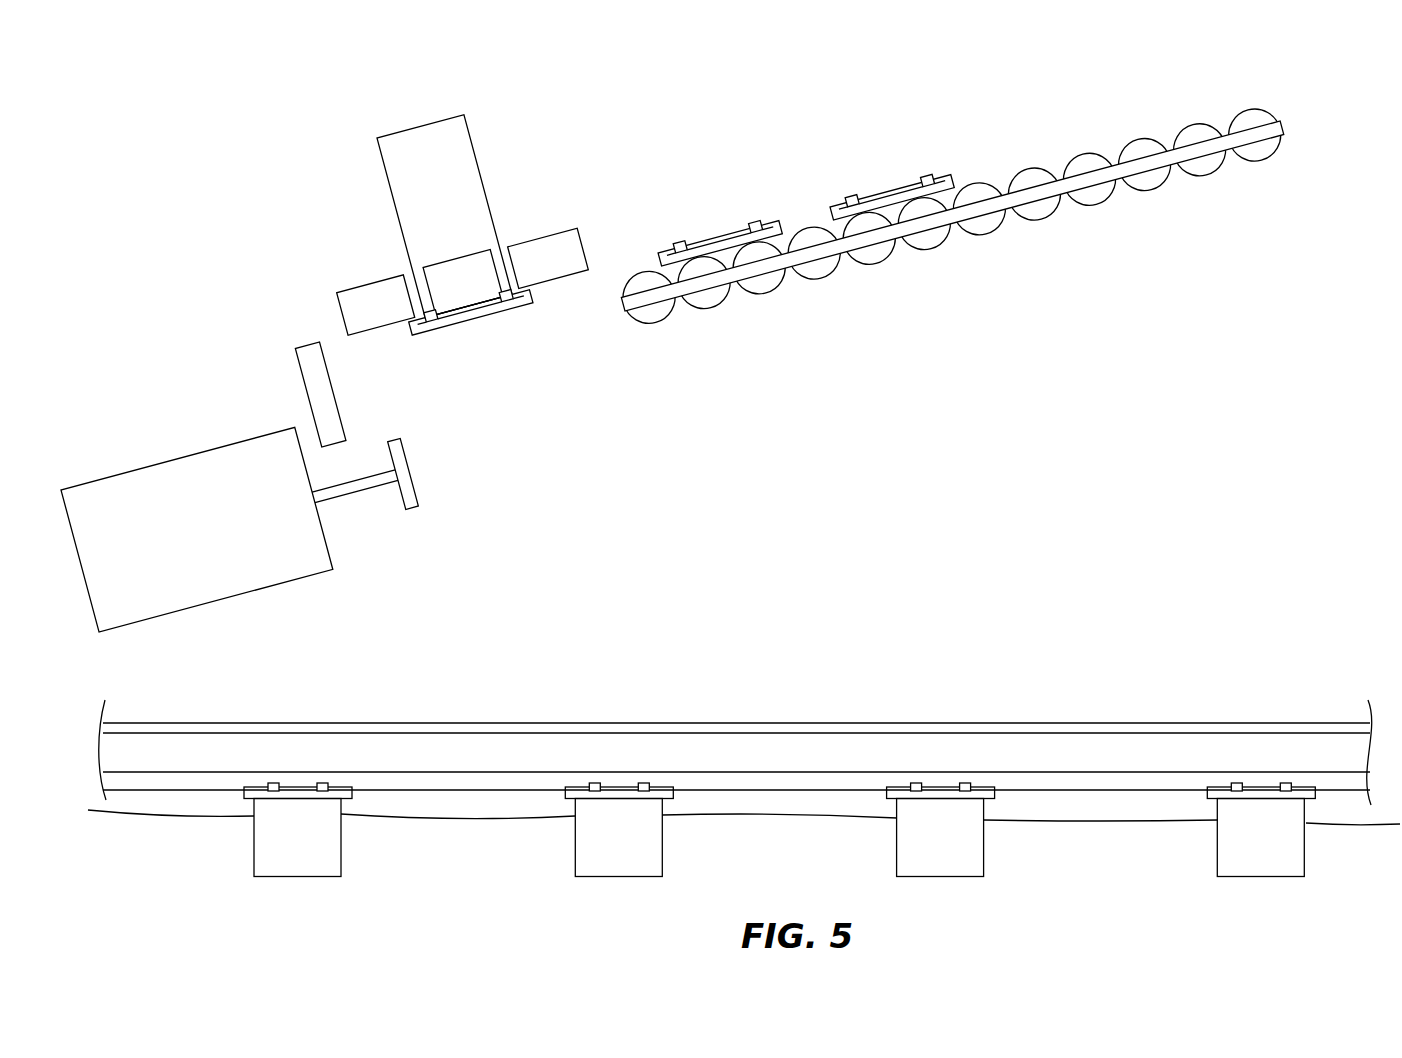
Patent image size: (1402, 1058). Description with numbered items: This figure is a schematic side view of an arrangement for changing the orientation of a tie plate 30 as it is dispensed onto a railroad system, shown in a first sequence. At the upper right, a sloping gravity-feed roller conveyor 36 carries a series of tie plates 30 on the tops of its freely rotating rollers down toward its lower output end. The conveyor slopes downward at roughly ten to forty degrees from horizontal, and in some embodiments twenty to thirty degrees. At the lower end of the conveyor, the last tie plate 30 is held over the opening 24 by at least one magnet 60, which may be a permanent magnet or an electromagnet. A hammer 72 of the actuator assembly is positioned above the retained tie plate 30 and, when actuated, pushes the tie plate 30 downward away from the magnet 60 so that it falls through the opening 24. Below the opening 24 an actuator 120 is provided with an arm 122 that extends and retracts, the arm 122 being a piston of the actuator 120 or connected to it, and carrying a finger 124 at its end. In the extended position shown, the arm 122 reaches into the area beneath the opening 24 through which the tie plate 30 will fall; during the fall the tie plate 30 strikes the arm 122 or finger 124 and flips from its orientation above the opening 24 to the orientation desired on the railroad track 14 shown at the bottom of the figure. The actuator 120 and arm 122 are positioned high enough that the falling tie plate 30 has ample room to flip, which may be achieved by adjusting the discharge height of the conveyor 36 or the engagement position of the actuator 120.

The railroad track 14 is at (882, 741).
The opening 24 is at (572, 332).
The tie plate 30 is at (452, 328).
The conveyor 36 is at (881, 147).
The magnet 60 is at (355, 300).
The hammer 72 is at (388, 172).
The actuator 120 is at (190, 455).
The arm 122 is at (331, 496).
The finger 124 is at (407, 491).